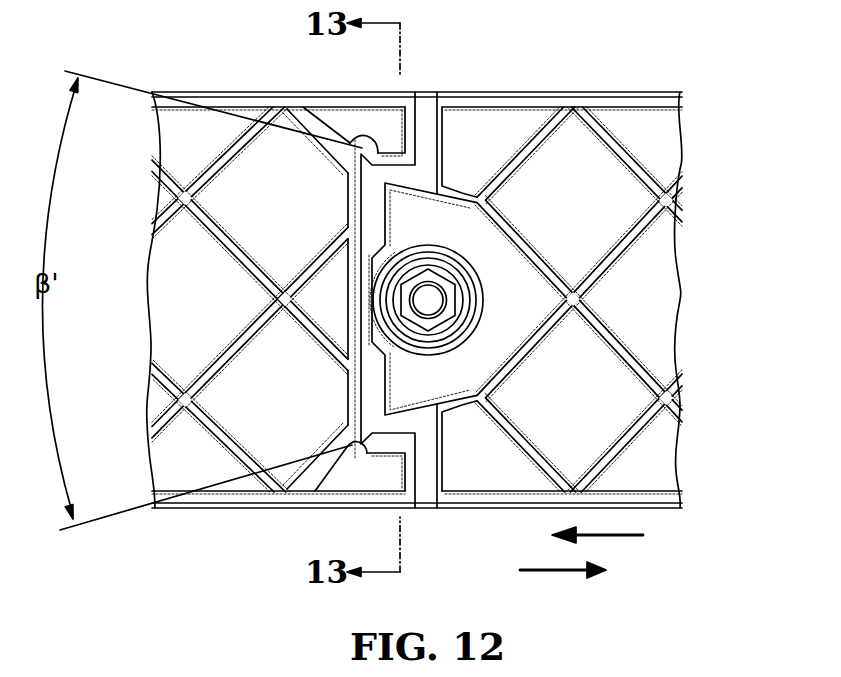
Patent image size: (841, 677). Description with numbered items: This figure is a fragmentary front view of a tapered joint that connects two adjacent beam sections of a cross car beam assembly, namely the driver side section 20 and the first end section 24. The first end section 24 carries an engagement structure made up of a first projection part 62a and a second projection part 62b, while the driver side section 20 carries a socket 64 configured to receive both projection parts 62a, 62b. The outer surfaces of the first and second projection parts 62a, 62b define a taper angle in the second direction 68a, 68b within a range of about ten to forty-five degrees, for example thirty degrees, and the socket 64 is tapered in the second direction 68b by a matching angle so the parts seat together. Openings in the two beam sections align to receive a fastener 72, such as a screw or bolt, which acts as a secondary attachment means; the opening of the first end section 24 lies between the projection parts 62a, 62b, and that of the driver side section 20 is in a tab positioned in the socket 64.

The driver side section 20 is at (272, 94).
The first end section 24 is at (495, 95).
The first projection part 62a is at (348, 190).
The second projection part 62b is at (350, 414).
The socket 64 is at (362, 210).
The fastener 72 is at (428, 300).
The second direction 68a is at (625, 537).
The second direction 68b is at (543, 573).